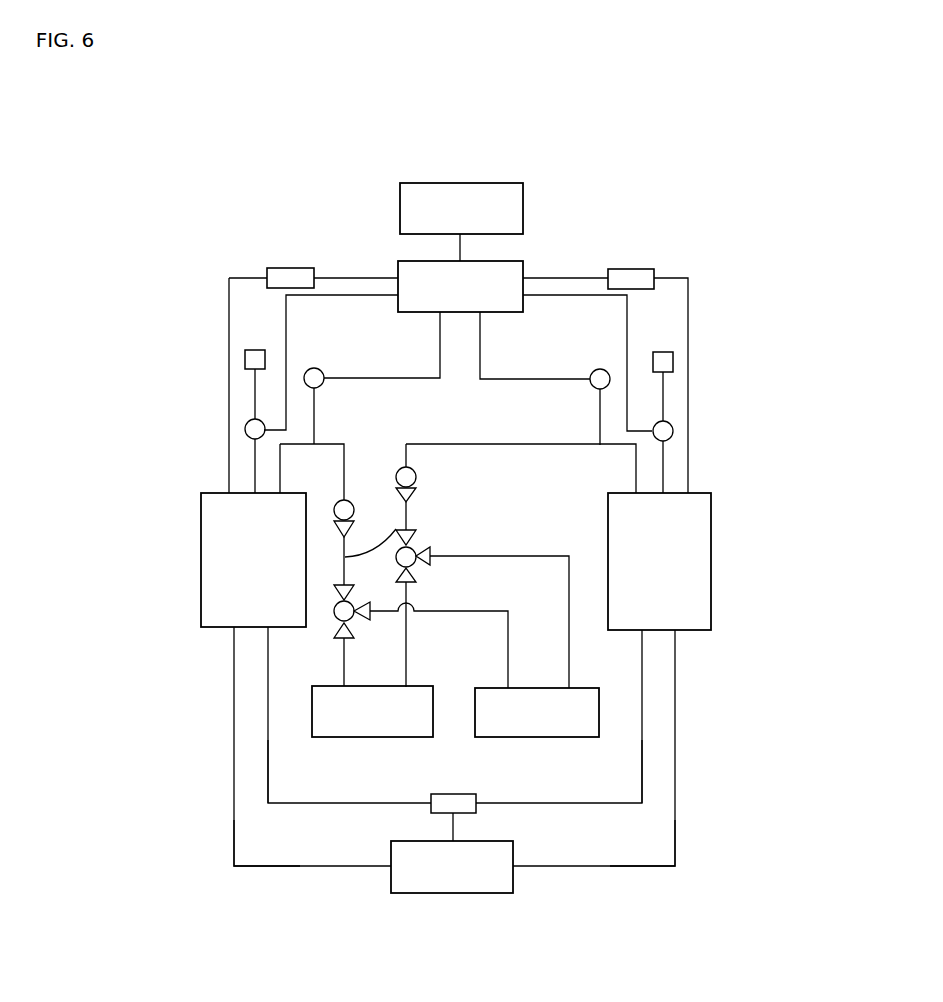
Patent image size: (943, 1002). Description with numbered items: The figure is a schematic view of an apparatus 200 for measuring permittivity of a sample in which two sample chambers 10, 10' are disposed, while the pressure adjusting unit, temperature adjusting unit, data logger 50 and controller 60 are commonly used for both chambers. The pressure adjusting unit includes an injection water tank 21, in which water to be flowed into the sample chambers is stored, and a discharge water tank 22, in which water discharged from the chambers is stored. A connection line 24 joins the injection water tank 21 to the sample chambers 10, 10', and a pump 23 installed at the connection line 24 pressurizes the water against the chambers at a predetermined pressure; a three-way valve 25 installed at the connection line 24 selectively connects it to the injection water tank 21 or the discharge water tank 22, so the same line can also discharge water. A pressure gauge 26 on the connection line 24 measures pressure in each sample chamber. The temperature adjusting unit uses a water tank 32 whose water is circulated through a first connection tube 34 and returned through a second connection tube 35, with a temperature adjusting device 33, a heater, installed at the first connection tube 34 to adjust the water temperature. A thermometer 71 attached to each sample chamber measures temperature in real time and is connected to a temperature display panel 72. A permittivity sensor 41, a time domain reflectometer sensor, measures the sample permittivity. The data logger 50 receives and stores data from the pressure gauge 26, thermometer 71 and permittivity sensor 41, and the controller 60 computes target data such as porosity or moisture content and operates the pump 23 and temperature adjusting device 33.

The apparatus for measuring permittivity of a sample 200 is at (604, 152).
The controller 60 is at (466, 183).
The data logger 50 is at (410, 260).
The permittivity sensor 41 is at (291, 267).
The temperature display panel 72 is at (245, 358).
The thermometer 71 is at (245, 429).
The pressure gauge 26 is at (317, 369).
The pump 23 is at (338, 502).
The connection line 24 is at (413, 518).
The 3-way valve 25 is at (351, 634).
The sample chamber 10 is at (213, 560).
The sample chamber 10' is at (700, 561).
The injection water tank 21 is at (312, 708).
The discharge water tank 22 is at (599, 712).
The first connection tube 34 is at (268, 773).
The temperature adjusting device 33 is at (453, 794).
The second connection tube 35 is at (313, 867).
The water tank 32 is at (452, 893).